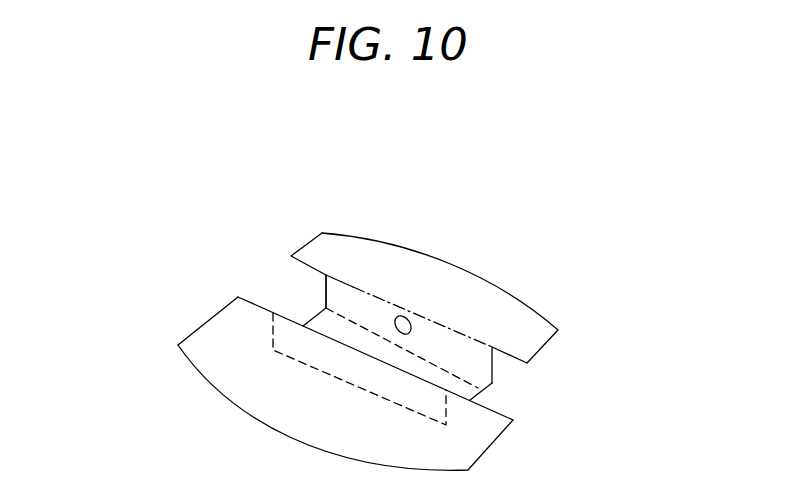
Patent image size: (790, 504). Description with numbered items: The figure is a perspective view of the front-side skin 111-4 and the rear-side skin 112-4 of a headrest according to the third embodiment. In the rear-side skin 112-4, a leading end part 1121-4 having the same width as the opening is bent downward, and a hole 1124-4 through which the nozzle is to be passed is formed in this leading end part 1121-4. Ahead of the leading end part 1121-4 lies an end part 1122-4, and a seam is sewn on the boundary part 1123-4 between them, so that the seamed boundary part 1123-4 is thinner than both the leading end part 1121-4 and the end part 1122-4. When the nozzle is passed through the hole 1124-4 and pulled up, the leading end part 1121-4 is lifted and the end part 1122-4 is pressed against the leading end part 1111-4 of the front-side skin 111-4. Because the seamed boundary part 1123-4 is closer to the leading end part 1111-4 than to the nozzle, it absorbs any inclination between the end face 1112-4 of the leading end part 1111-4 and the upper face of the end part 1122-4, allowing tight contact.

The rear-side skin 112-4 is at (483, 300).
The front-side skin 111-4 is at (297, 392).
The leading end part 1111-4 is at (310, 343).
The end face 1112-4 is at (356, 385).
The leading end part 1121-4 is at (483, 302).
The end part 1122-4 is at (488, 387).
The seamed boundary part 1123-4 is at (353, 317).
The hole 1124-4 is at (405, 315).